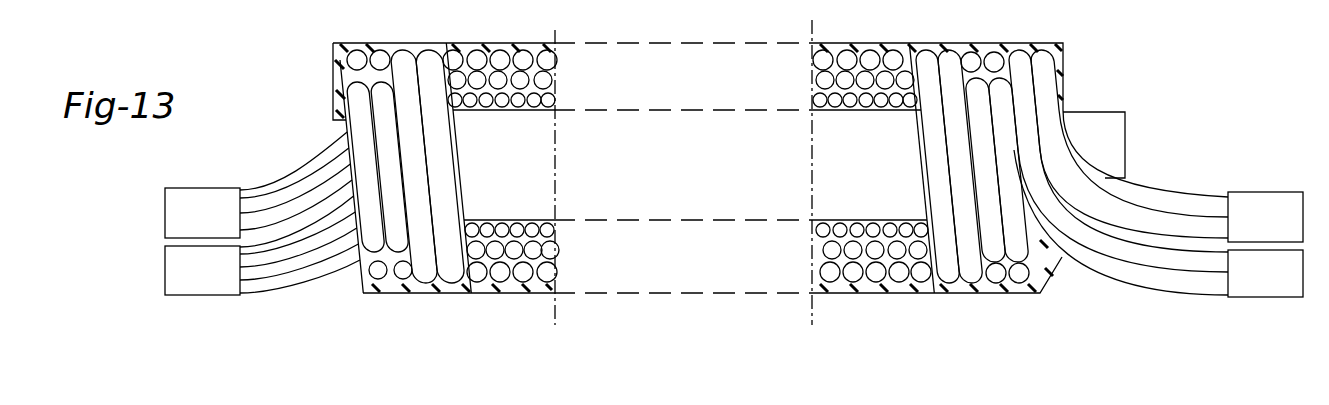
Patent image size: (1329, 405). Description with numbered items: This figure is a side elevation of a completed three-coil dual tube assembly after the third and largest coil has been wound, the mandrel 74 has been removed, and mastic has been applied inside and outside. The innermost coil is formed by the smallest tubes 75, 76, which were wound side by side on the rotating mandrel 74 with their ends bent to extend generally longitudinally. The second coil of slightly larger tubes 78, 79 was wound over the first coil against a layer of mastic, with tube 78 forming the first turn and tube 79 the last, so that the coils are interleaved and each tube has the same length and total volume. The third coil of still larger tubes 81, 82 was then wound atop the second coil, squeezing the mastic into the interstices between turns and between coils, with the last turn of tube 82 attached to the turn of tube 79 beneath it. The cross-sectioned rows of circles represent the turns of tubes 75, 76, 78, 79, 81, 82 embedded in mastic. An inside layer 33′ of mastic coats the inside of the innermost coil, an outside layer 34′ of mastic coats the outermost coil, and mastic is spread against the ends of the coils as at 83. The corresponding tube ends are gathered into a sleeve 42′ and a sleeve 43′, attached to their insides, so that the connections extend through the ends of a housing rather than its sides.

The inside layer of mastic 33′ is at (536, 110).
The outside layer of mastic 34′ is at (420, 43).
The sleeve 42′ is at (192, 296).
The sleeve 43′ is at (216, 188).
The rotating mandrel 74 is at (548, 162).
The tube 75 is at (485, 110).
The tube 76 is at (477, 110).
The tube 78 is at (495, 55).
The tube 79 is at (340, 85).
The tube 81 is at (384, 48).
The tube 82 is at (357, 50).
The mastic spread against coil ends 83 is at (333, 56).